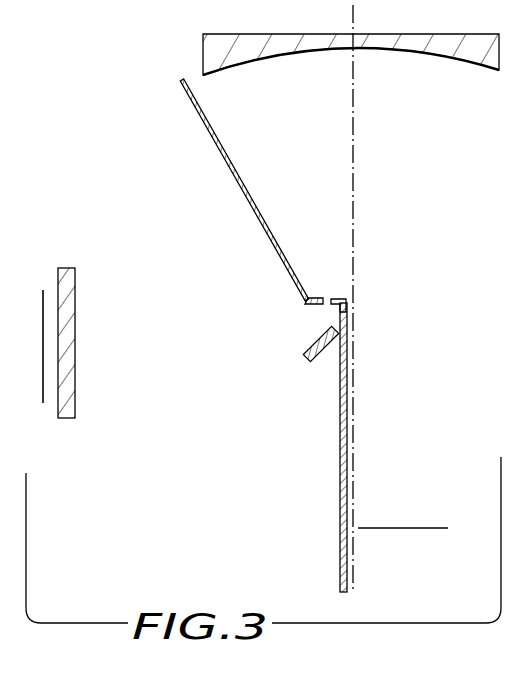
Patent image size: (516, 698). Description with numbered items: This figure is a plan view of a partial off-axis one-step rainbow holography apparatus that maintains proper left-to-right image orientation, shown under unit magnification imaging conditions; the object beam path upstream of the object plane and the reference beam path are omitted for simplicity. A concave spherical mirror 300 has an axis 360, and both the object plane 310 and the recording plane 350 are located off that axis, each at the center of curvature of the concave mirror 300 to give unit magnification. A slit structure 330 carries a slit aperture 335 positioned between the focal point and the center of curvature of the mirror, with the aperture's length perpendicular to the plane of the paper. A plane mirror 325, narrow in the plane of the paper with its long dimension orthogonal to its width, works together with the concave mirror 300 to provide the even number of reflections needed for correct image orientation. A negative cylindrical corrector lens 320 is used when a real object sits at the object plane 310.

The concave spherical mirror 300 is at (440, 42).
The axis 360 is at (349, 12).
The slit structure 330 is at (242, 180).
The slit aperture 335 is at (323, 302).
The plane mirror 325 is at (322, 352).
The recording plane 350 is at (416, 500).
The object plane 310 is at (43, 403).
The negative cylindrical corrector lens 320 is at (76, 396).